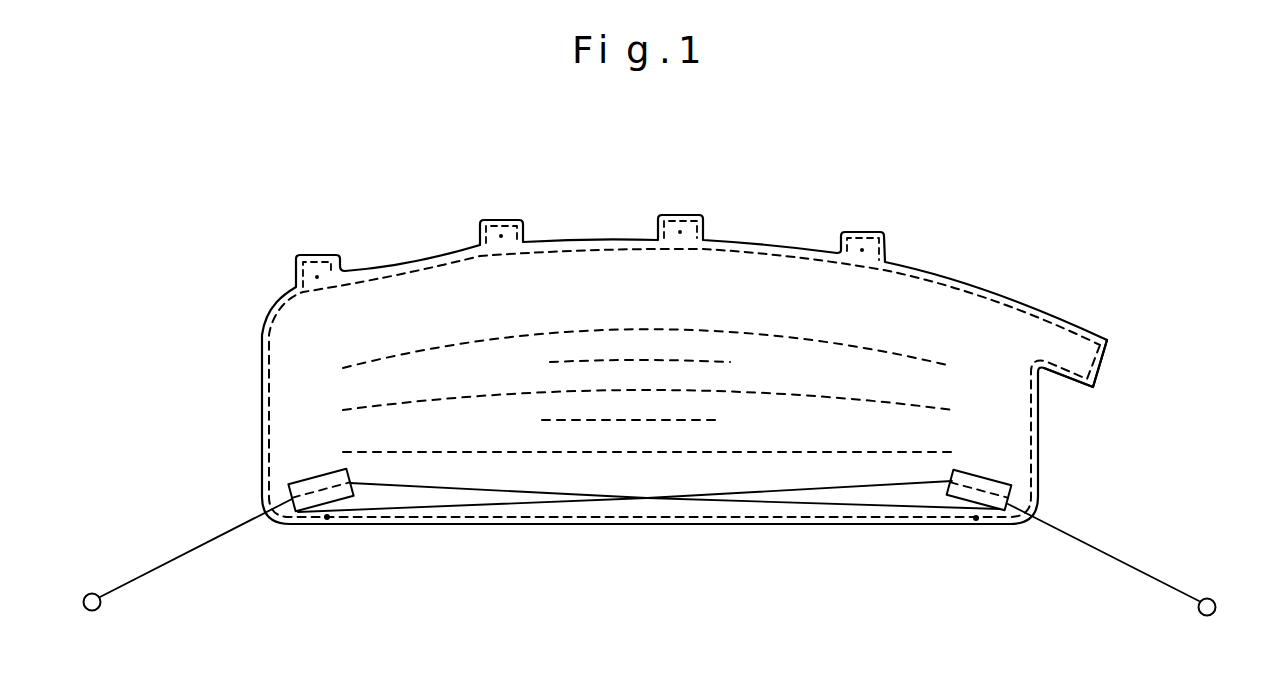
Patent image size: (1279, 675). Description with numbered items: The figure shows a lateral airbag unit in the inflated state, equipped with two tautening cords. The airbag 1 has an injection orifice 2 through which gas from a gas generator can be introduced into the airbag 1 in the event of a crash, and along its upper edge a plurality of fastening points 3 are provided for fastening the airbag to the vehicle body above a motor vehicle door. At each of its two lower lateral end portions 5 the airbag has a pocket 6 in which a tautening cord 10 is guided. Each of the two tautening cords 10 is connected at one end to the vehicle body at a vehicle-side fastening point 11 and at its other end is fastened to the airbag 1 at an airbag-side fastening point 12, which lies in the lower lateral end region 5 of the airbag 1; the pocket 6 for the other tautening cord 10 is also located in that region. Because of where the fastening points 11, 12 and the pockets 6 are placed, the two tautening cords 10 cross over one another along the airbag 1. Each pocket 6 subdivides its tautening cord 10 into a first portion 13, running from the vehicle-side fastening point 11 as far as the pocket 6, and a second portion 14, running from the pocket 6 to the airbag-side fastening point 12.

The airbag 1 is at (970, 307).
The injection orifice 2 is at (1092, 350).
The fastening points 3 is at (330, 256).
The lower lateral end portion 5 is at (285, 464).
The pocket 6 is at (298, 515).
The tautening cord 10 is at (207, 553).
The fastening point 11 is at (87, 593).
The fastening point 12 is at (330, 519).
The first portion 13 is at (152, 570).
The second portion 14 is at (475, 490).